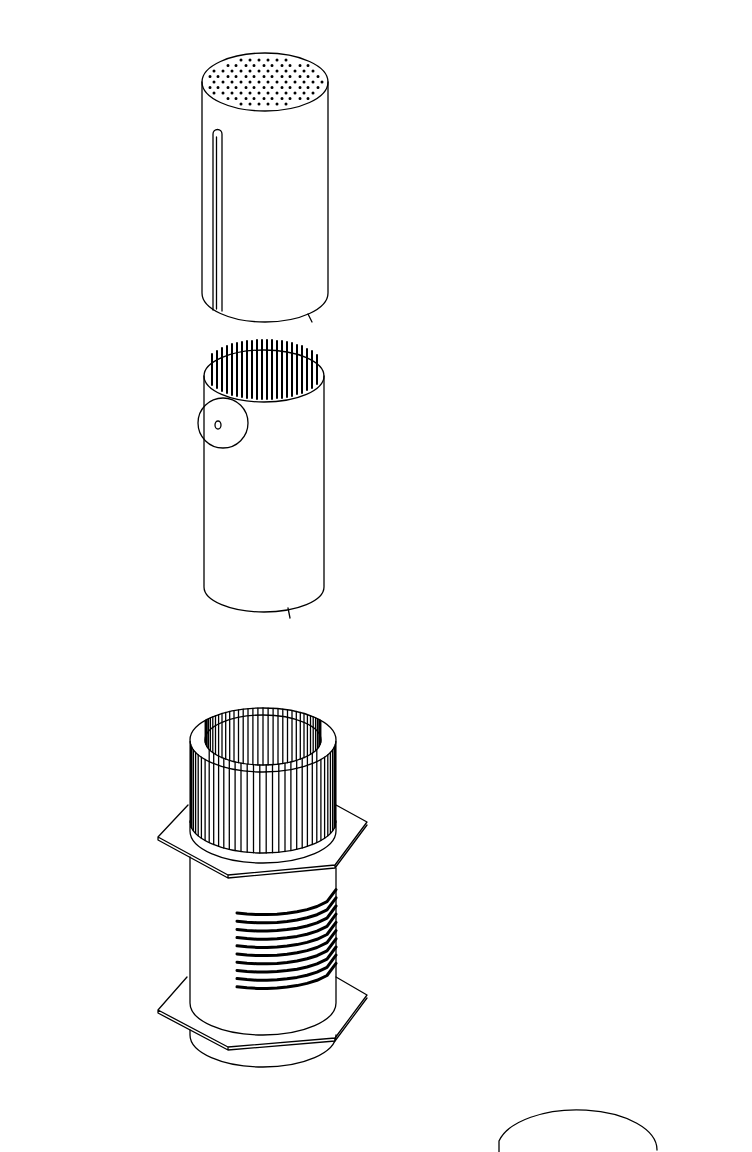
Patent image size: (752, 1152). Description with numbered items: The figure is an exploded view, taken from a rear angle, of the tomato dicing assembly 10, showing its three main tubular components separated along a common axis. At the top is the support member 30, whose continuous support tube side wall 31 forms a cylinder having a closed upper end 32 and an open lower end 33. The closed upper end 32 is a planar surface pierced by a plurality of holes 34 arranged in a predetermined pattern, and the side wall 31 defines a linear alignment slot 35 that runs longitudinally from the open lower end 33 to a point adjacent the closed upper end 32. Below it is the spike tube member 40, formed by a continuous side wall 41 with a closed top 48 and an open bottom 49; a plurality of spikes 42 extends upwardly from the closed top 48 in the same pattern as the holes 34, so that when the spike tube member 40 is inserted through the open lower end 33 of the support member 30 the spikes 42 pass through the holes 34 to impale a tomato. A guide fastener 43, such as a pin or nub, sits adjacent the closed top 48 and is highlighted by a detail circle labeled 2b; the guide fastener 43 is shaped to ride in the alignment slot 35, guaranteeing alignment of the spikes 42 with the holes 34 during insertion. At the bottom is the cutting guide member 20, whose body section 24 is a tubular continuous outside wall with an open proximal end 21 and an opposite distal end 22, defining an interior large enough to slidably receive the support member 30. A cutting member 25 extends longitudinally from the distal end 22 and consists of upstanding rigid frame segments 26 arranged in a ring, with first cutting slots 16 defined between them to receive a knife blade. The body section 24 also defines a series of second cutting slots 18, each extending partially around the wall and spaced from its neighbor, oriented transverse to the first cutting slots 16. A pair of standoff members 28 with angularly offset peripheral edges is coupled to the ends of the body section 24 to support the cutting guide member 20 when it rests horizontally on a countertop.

The tomato dicing assembly 10 is at (565, 215).
The support member 30 is at (390, 165).
The continuous support tube side wall 31 is at (303, 246).
The closed upper end 32 is at (328, 73).
The open lower end 33 is at (308, 314).
The holes 34 is at (284, 67).
The alignment slot 35 is at (216, 247).
The spike tube member 40 is at (380, 500).
The continuous side wall 41 is at (305, 460).
The spikes 42 is at (290, 345).
The guide fastener 43 is at (215, 425).
The detail circle 2b is at (205, 420).
The closed top 48 is at (322, 373).
The open bottom 49 is at (288, 608).
The cutting guide member 20 is at (412, 855).
The open proximal end 21 is at (312, 1060).
The distal end 22 is at (193, 848).
The body section 24 is at (245, 897).
The cutting member 25 is at (365, 777).
The frame segments 26 is at (272, 712).
The first cutting slots 16 is at (330, 735).
The second cutting slots 18 is at (336, 940).
The standoff members 28 is at (353, 823).